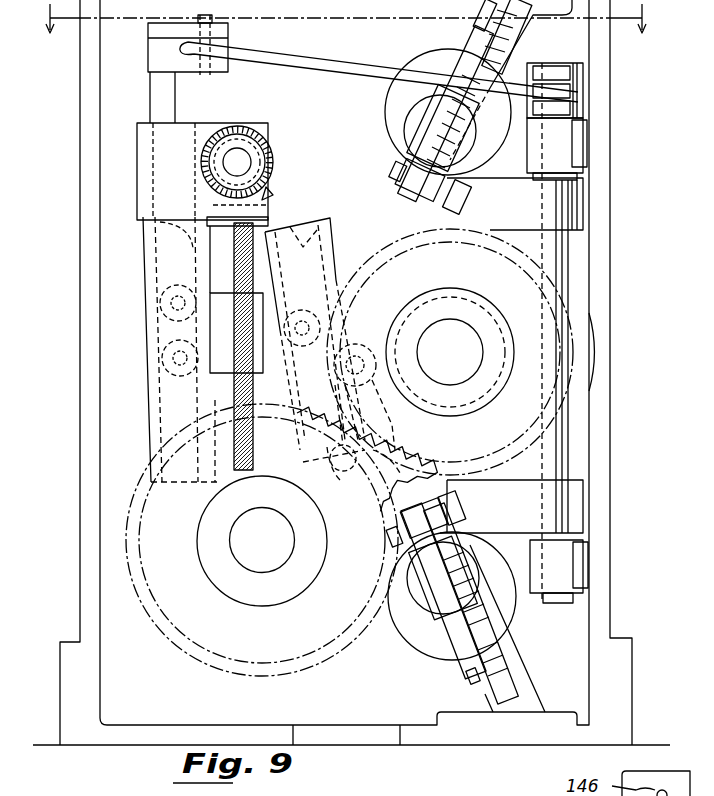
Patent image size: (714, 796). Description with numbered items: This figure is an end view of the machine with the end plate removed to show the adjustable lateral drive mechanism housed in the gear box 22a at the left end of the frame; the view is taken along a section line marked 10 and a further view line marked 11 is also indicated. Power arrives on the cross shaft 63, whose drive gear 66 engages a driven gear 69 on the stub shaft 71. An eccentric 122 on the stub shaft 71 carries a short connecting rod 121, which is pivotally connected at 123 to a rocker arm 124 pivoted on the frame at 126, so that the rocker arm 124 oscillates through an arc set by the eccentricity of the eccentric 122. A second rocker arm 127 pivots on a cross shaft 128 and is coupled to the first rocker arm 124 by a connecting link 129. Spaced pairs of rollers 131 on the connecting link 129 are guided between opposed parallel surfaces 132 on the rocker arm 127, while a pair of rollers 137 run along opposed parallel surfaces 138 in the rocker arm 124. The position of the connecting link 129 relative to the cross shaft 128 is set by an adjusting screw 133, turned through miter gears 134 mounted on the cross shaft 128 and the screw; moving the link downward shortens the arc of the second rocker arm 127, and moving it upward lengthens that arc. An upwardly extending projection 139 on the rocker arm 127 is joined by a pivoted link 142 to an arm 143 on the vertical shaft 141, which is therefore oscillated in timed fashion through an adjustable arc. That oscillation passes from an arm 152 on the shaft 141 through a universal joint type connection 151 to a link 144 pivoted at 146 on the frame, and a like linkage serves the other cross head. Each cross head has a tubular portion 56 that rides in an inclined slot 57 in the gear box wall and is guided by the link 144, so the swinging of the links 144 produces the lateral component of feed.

The section line 10- 10 is at (345, 19).
The bracket 11 is at (552, 52).
The gear box 22a is at (100, 250).
The tubular portion 56 is at (413, 150).
The inclined slot 57 is at (427, 90).
The cross shaft 63 is at (253, 557).
The drive gear 66 is at (337, 637).
The driven gear 69 is at (407, 477).
The stub shaft 71 is at (445, 377).
The connecting rod 121 is at (362, 387).
The eccentric 122 is at (462, 308).
The pivotal connection 123 is at (350, 343).
The rocker arm 124 is at (330, 217).
The pivot 126 is at (346, 479).
The second rocker arm 127 is at (143, 287).
The cross shaft 128 is at (247, 157).
The connecting link 129 is at (217, 337).
The rollers 131 is at (178, 335).
The opposed parallel surfaces 132 is at (202, 174).
The adjusting screw 133 is at (258, 397).
The miter gears 134 is at (273, 193).
The rollers 137 is at (305, 310).
The opposed parallel surfaces 138 is at (328, 230).
The upwardly extending projection 139 is at (176, 101).
The vertical shaft 141 is at (560, 259).
The pivoted link 142 is at (312, 58).
The arm 143 is at (578, 110).
The link 144 is at (467, 62).
The pivot 146 is at (473, 680).
The universal joint type connection 151 is at (466, 189).
The arm 152 is at (525, 223).